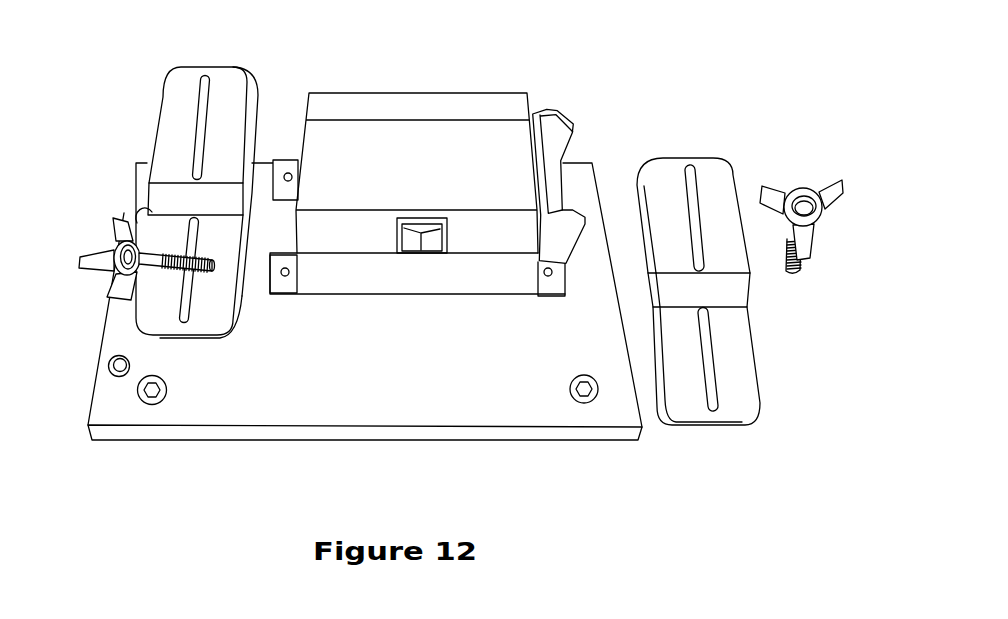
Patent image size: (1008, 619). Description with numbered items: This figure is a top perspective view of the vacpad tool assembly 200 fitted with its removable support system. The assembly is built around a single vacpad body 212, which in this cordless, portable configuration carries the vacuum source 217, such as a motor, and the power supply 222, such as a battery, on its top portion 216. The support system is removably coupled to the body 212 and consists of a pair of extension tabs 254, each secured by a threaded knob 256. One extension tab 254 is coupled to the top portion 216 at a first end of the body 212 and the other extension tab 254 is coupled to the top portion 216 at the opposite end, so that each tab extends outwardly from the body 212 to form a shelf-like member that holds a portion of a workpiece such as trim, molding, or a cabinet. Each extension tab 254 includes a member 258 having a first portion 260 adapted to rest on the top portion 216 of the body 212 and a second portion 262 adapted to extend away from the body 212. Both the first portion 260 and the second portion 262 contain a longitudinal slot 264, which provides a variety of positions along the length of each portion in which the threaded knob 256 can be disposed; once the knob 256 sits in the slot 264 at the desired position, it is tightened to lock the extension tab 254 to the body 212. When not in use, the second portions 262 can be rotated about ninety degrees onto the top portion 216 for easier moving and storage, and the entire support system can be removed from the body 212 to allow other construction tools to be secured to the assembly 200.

The vacpad tool assembly 200 is at (838, 65).
The vacpad body 212 is at (125, 193).
The top portion 216 is at (410, 407).
The vacuum source 217 is at (408, 165).
The power supply 222 is at (560, 112).
The extension tab 254 is at (737, 337).
The threaded knob 256 is at (100, 232).
The member 258 is at (160, 115).
The first portion 260 is at (173, 83).
The second portion 262 is at (217, 315).
The slot 264 is at (202, 98).